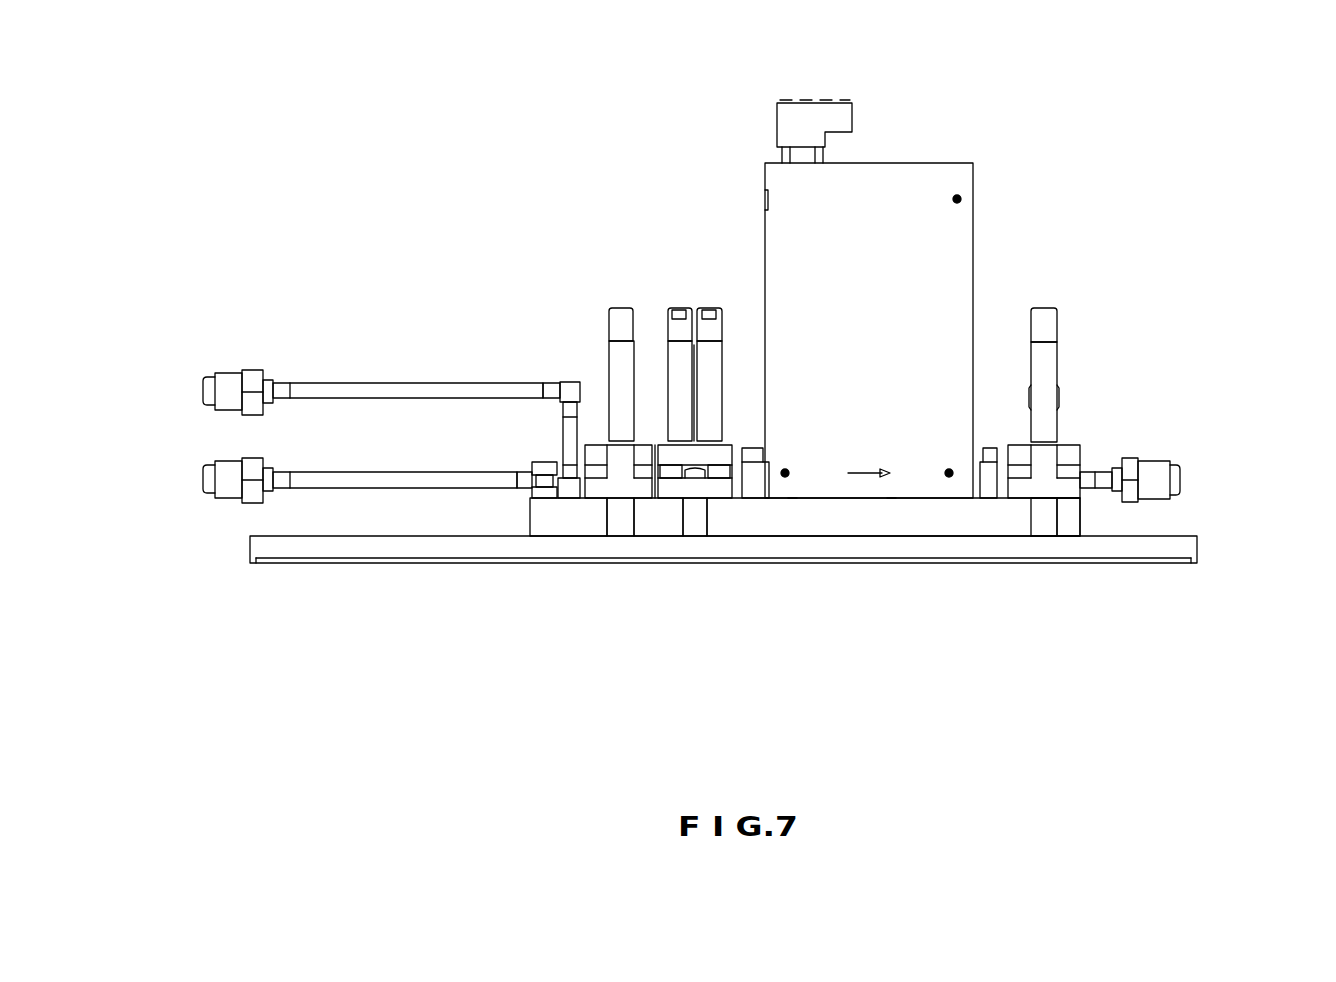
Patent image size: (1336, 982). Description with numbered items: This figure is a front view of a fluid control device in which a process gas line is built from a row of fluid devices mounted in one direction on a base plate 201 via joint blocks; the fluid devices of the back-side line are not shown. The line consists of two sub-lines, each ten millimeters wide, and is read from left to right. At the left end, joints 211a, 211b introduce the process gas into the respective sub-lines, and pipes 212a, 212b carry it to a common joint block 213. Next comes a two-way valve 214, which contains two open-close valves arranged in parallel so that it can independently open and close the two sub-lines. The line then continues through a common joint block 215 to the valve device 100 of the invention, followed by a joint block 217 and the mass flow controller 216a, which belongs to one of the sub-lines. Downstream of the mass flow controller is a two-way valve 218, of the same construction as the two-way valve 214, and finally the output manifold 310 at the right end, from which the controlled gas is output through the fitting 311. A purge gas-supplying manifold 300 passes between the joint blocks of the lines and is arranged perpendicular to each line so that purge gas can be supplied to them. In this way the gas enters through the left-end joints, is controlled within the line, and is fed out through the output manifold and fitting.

The valve device 100 is at (689, 296).
The base plate 201 is at (1190, 548).
The joint 211a is at (226, 500).
The joint 211b is at (203, 390).
The pipe 212a is at (405, 383).
The pipe 212b is at (415, 472).
The common joint block 213 is at (558, 522).
The two-way valve 214 is at (606, 322).
The common joint block 215 is at (650, 518).
The mass flow controller 216a is at (890, 162).
The joint block 217 is at (832, 528).
The two-way valve 218 is at (1058, 357).
The purge gas-supplying manifold 300 is at (692, 520).
The output manifold 310 is at (1068, 520).
The fitting 311 is at (1163, 460).